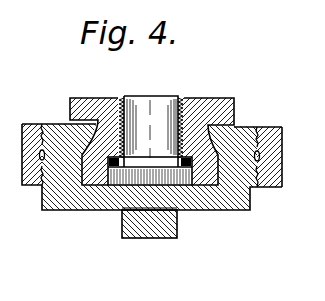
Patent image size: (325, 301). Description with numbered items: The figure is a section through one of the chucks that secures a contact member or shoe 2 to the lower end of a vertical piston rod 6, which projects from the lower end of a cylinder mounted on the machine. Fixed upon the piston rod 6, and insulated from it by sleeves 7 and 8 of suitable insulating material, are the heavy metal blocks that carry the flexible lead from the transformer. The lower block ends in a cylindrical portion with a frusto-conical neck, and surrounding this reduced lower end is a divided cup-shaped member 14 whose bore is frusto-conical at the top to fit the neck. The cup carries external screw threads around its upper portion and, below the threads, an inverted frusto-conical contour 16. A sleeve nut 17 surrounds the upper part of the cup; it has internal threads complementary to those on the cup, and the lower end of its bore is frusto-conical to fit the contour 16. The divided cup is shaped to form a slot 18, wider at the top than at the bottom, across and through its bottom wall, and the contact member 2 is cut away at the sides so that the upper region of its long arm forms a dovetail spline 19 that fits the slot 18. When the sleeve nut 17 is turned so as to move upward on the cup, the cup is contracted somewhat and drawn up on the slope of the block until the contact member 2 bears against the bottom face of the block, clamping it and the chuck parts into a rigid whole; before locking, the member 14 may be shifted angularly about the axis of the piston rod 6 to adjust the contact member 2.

The base block 2 is at (162, 239).
The piston rod 6 is at (151, 101).
The sleeve 7 is at (118, 97).
The sleeve 8 is at (202, 187).
The divided cup-shaped member 14 is at (244, 127).
The inverted frusto-conical contour 16 is at (258, 190).
The sleeve nut 17 is at (271, 126).
The slot 18 is at (130, 187).
The dovetail spline 19 is at (147, 200).